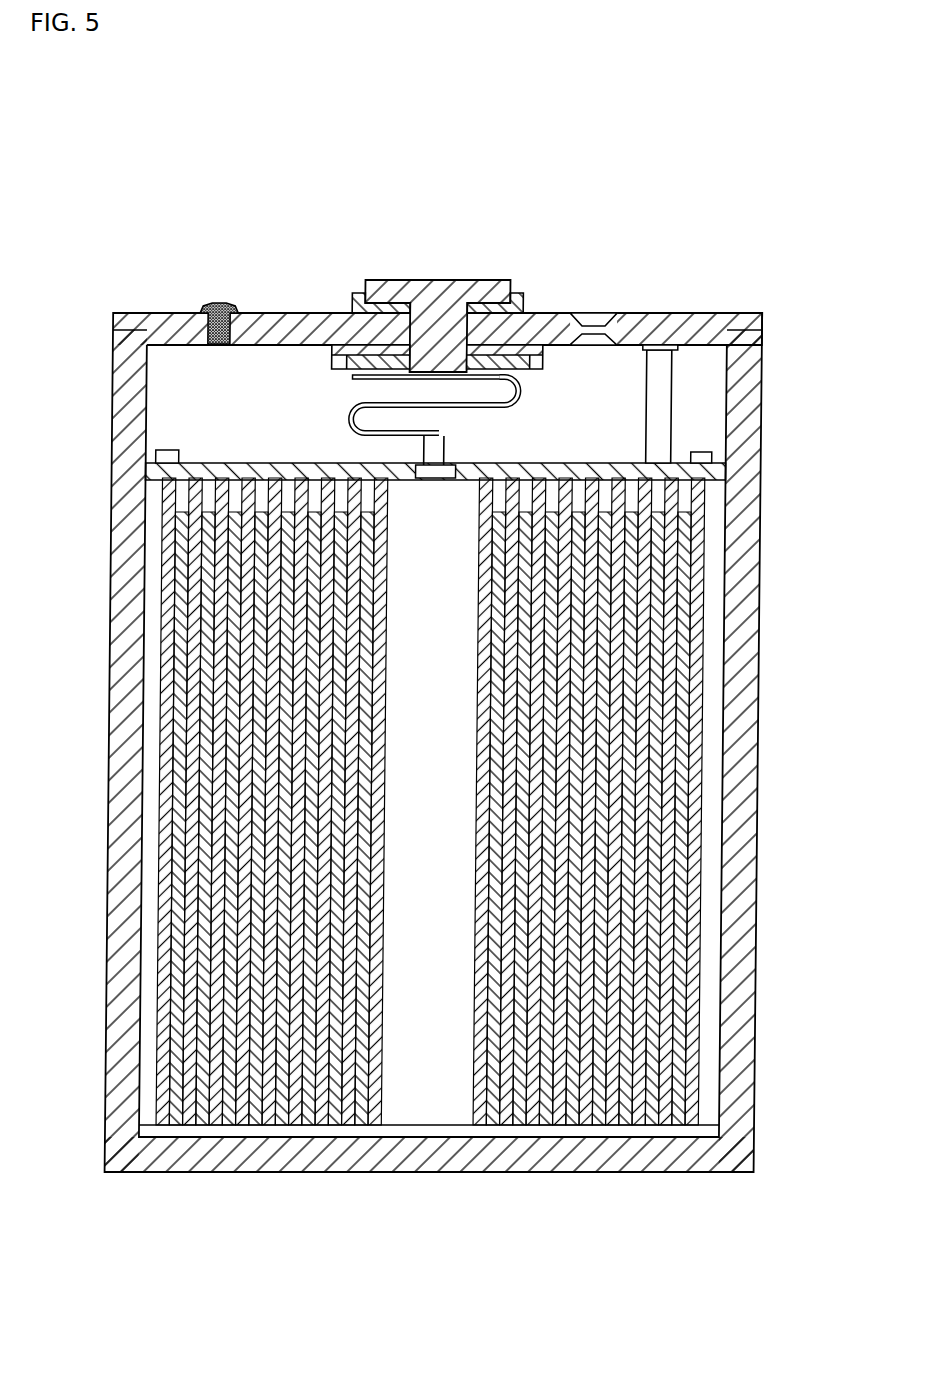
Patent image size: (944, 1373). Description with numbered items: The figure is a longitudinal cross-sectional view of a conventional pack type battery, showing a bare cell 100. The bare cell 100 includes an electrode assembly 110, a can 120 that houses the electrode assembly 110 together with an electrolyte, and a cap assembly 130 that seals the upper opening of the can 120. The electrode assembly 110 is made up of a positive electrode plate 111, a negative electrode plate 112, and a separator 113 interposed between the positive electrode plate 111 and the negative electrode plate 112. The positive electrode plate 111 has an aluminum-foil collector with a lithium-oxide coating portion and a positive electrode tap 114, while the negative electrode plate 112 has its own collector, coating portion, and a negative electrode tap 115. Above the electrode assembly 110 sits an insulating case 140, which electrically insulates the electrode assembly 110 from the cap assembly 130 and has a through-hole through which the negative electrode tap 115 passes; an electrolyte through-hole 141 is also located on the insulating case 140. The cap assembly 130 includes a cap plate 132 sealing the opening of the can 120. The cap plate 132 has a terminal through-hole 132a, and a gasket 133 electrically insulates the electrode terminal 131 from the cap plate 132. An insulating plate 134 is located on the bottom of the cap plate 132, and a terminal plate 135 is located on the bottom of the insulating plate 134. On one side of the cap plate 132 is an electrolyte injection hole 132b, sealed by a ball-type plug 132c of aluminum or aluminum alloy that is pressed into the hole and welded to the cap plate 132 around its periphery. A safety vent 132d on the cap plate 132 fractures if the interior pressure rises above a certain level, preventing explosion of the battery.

The bare cell 100 is at (92, 126).
The electrode assembly 110 is at (455, 898).
The positive electrode plate 111 is at (660, 1123).
The negative electrode plate 112 is at (686, 1123).
The separator 113 is at (675, 1123).
The positive electrode tap 114 is at (670, 397).
The negative electrode tap 115 is at (352, 417).
The can 120 is at (747, 648).
The cap assembly 130 is at (436, 334).
The electrode terminal 131 is at (437, 292).
The cap plate 132 is at (180, 313).
The terminal through-hole 132a is at (483, 355).
The electrolyte injection hole 132b is at (222, 353).
The plug 132c is at (215, 302).
The safety vent 132d is at (595, 313).
The gasket 133 is at (517, 295).
The insulating plate 134 is at (324, 313).
The terminal plate 135 is at (530, 370).
The insulating case 140 is at (722, 468).
The electrolyte through-hole 141 is at (618, 465).